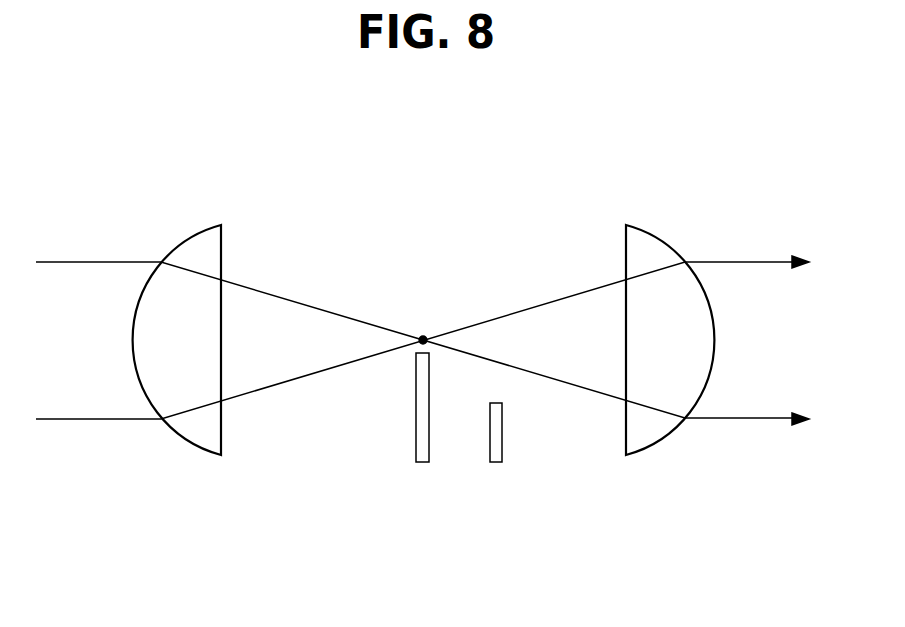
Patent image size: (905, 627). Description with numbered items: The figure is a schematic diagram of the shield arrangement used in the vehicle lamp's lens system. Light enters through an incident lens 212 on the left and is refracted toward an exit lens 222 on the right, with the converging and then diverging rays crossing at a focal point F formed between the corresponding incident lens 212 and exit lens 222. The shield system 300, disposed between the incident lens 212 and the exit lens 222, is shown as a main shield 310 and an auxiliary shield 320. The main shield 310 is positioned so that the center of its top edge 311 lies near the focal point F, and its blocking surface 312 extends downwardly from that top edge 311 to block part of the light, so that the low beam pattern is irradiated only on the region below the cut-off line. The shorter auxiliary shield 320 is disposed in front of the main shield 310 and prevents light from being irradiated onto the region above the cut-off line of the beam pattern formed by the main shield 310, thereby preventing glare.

The incident lens 212 is at (200, 432).
The exit lens 222 is at (645, 432).
The shield system 300 is at (437, 437).
The main shield 310 is at (418, 411).
The top edge 311 is at (428, 338).
The blocking surface 312 is at (416, 419).
The auxiliary shield 320 is at (496, 462).
The focal point F is at (419, 338).